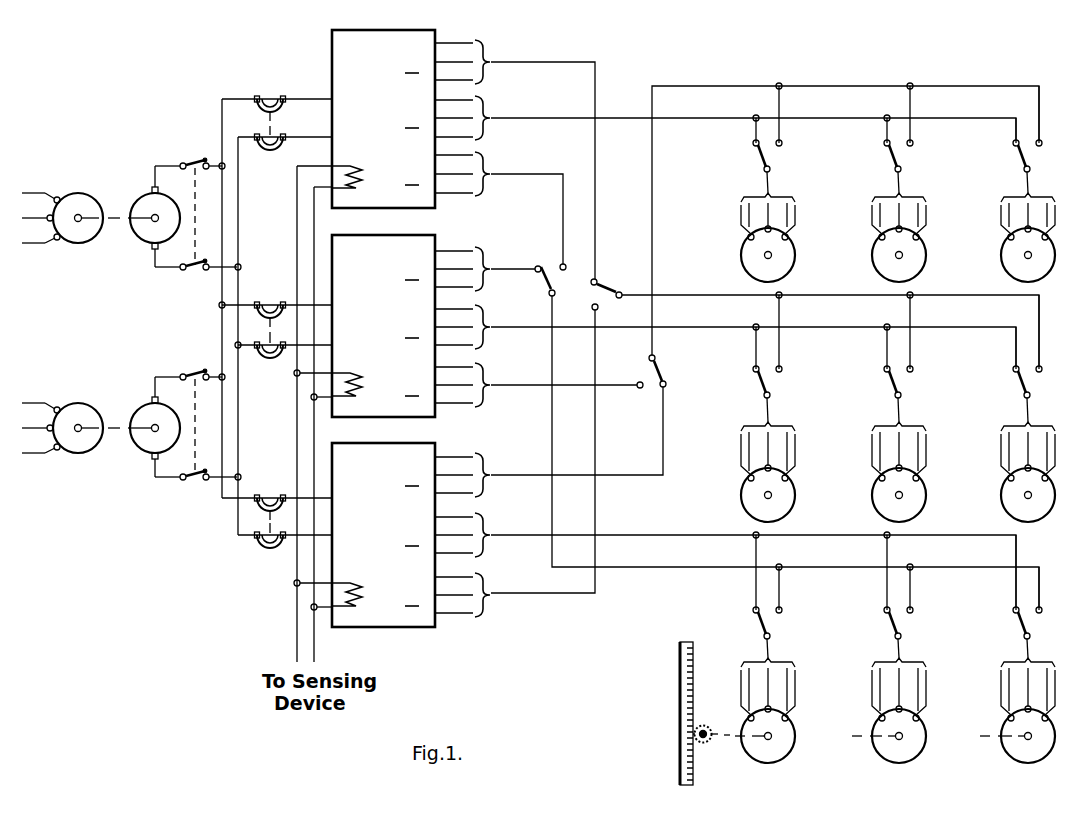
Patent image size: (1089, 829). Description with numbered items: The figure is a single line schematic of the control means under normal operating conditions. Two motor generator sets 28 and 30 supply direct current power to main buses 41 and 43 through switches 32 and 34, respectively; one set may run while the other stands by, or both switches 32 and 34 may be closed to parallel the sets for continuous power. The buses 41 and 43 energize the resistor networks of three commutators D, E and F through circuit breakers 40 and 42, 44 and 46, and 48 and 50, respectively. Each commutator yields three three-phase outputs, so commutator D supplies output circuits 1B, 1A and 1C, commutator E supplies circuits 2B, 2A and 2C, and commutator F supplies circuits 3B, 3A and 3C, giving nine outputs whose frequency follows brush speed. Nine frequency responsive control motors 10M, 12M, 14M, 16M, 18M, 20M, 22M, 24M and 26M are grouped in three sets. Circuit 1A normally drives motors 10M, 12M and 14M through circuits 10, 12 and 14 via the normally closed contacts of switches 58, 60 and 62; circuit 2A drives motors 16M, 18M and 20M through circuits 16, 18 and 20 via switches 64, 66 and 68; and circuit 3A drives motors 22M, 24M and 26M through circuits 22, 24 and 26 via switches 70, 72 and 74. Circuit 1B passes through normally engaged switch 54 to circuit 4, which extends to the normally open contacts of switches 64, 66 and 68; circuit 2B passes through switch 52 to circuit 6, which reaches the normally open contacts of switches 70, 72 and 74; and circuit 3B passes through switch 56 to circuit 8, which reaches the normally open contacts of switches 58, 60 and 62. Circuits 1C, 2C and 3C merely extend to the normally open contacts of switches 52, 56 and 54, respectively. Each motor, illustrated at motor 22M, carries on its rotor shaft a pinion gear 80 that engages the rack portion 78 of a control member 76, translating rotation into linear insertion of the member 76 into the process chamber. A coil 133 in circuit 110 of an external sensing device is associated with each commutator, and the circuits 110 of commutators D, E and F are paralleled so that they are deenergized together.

The circuit 4 is at (660, 295).
The circuit 6 is at (670, 566).
The circuit 8 is at (653, 175).
The circuit 10 is at (770, 187).
The circuit 12 is at (901, 187).
The circuit 14 is at (1030, 187).
The circuit 16 is at (770, 415).
The circuit 18 is at (901, 415).
The circuit 20 is at (1030, 415).
The circuit 22 is at (770, 656).
The circuit 24 is at (901, 656).
The circuit 26 is at (1030, 656).
The control motor 10M is at (745, 252).
The control motor 12M is at (876, 252).
The control motor 14M is at (1005, 252).
The control motor 16M is at (745, 492).
The control motor 18M is at (876, 492).
The control motor 20M is at (1005, 492).
The control motor 22M is at (745, 722).
The control motor 24M is at (876, 722).
The control motor 26M is at (1004, 722).
The motor generator set 28 is at (128, 201).
The motor generator set 30 is at (128, 411).
The switch 32 is at (195, 236).
The switch 34 is at (193, 443).
The circuit breaker 40 is at (282, 96).
The main bus 41 is at (222, 320).
The circuit breaker 42 is at (282, 134).
The main bus 43 is at (238, 264).
The circuit breaker 44 is at (262, 303).
The circuit breaker 46 is at (262, 352).
The circuit breaker 48 is at (262, 496).
The circuit breaker 50 is at (262, 542).
The switch 52 is at (553, 274).
The switch 54 is at (604, 288).
The switch 56 is at (652, 374).
The switch 58 is at (761, 160).
The switch 60 is at (892, 160).
The switch 62 is at (1020, 160).
The switch 64 is at (760, 386).
The switch 66 is at (890, 386).
The switch 68 is at (1018, 386).
The switch 70 is at (758, 626).
The switch 72 is at (889, 626).
The switch 74 is at (1019, 626).
The control member 76 is at (668, 724).
The rack portion 78 is at (693, 660).
The pinion gear 80 is at (705, 743).
The circuit 110 is at (314, 640).
The coil 133 is at (360, 168).
The commutator D is at (383, 30).
The commutator E is at (370, 236).
The commutator F is at (372, 444).
The output circuit 1A is at (518, 117).
The output circuit 1B is at (515, 61).
The output circuit 1C is at (518, 173).
The output circuit 2A is at (491, 326).
The output circuit 2B is at (489, 268).
The output circuit 2C is at (491, 384).
The output circuit 3A is at (524, 536).
The output circuit 3B is at (524, 474).
The output circuit 3C is at (524, 596).